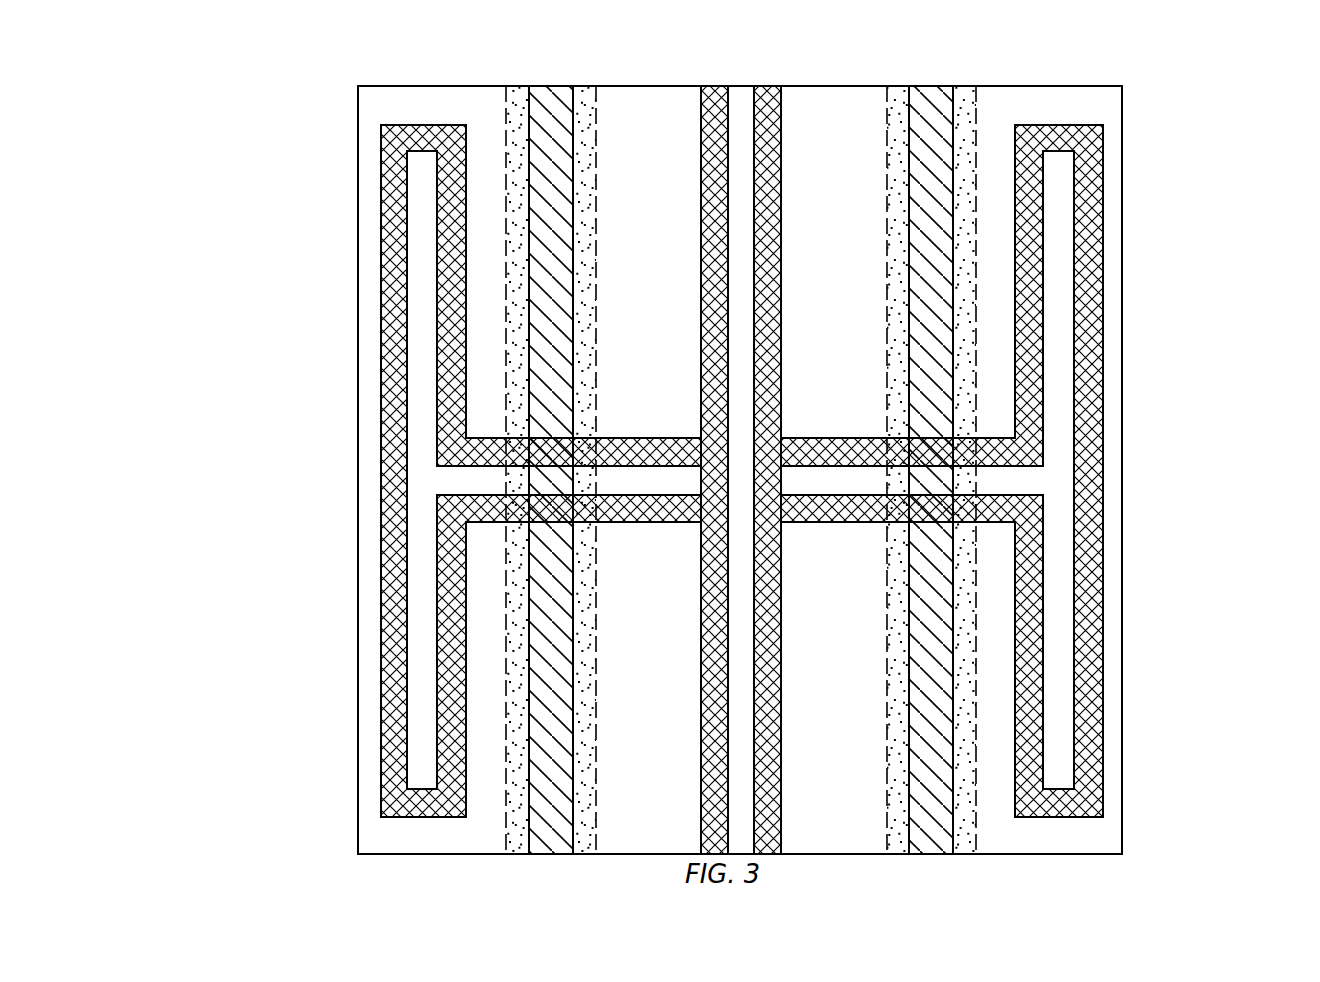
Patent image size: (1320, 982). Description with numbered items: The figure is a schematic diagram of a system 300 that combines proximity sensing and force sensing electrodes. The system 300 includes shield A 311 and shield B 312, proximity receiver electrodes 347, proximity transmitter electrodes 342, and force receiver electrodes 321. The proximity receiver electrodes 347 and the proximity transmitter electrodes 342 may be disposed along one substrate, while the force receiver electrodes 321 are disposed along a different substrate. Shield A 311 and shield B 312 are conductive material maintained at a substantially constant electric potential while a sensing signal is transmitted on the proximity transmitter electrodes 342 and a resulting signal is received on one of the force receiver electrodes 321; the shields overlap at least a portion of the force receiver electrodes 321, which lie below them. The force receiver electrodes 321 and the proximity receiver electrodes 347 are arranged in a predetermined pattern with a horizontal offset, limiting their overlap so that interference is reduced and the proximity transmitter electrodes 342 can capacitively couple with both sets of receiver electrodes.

The system 300 is at (198, 112).
The shield A 311 is at (515, 190).
The shield B 312 is at (968, 102).
The force receiver electrodes 321 is at (1212, 207).
The proximity transmitter electrodes 342 is at (368, 624).
The proximity receiver electrodes 347 is at (428, 380).